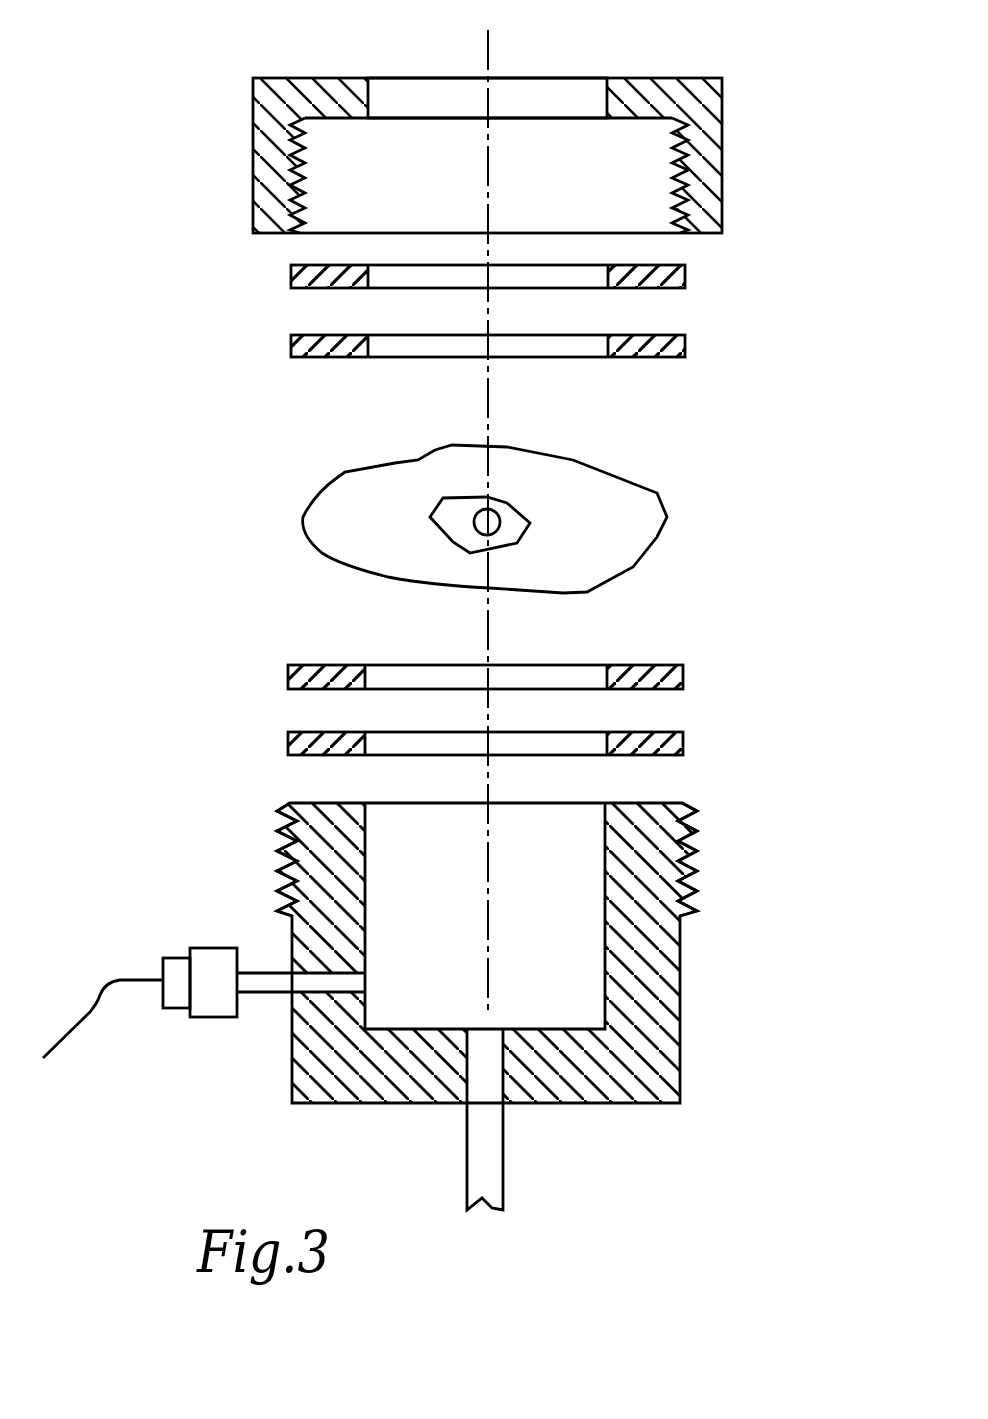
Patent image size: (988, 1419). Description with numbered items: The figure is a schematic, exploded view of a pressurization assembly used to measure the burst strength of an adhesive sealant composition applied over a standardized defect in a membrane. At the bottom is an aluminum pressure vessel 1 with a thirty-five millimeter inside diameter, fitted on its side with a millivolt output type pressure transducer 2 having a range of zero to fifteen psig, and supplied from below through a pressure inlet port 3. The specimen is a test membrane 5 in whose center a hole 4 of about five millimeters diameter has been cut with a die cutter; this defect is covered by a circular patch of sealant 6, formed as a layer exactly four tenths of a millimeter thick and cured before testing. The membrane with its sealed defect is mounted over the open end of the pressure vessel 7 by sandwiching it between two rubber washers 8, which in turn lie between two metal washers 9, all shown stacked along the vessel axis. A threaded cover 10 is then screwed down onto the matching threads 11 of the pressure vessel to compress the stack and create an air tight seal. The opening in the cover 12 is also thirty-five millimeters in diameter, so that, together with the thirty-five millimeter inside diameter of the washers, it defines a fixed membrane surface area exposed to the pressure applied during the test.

The pressure vessel 1 is at (680, 995).
The pressure transducer 2 is at (183, 1010).
The pressure inlet port 3 is at (483, 1190).
The hole 4 is at (475, 530).
The test membrane 5 is at (667, 517).
The circular patch of sealant 6 is at (447, 505).
The open end of the pressure vessel 7 is at (407, 815).
The rubber washers 8 is at (686, 345).
The metal washers 9 is at (686, 275).
The threaded cover 10 is at (673, 79).
The threads 11 is at (693, 878).
The opening in the cover 12 is at (438, 90).